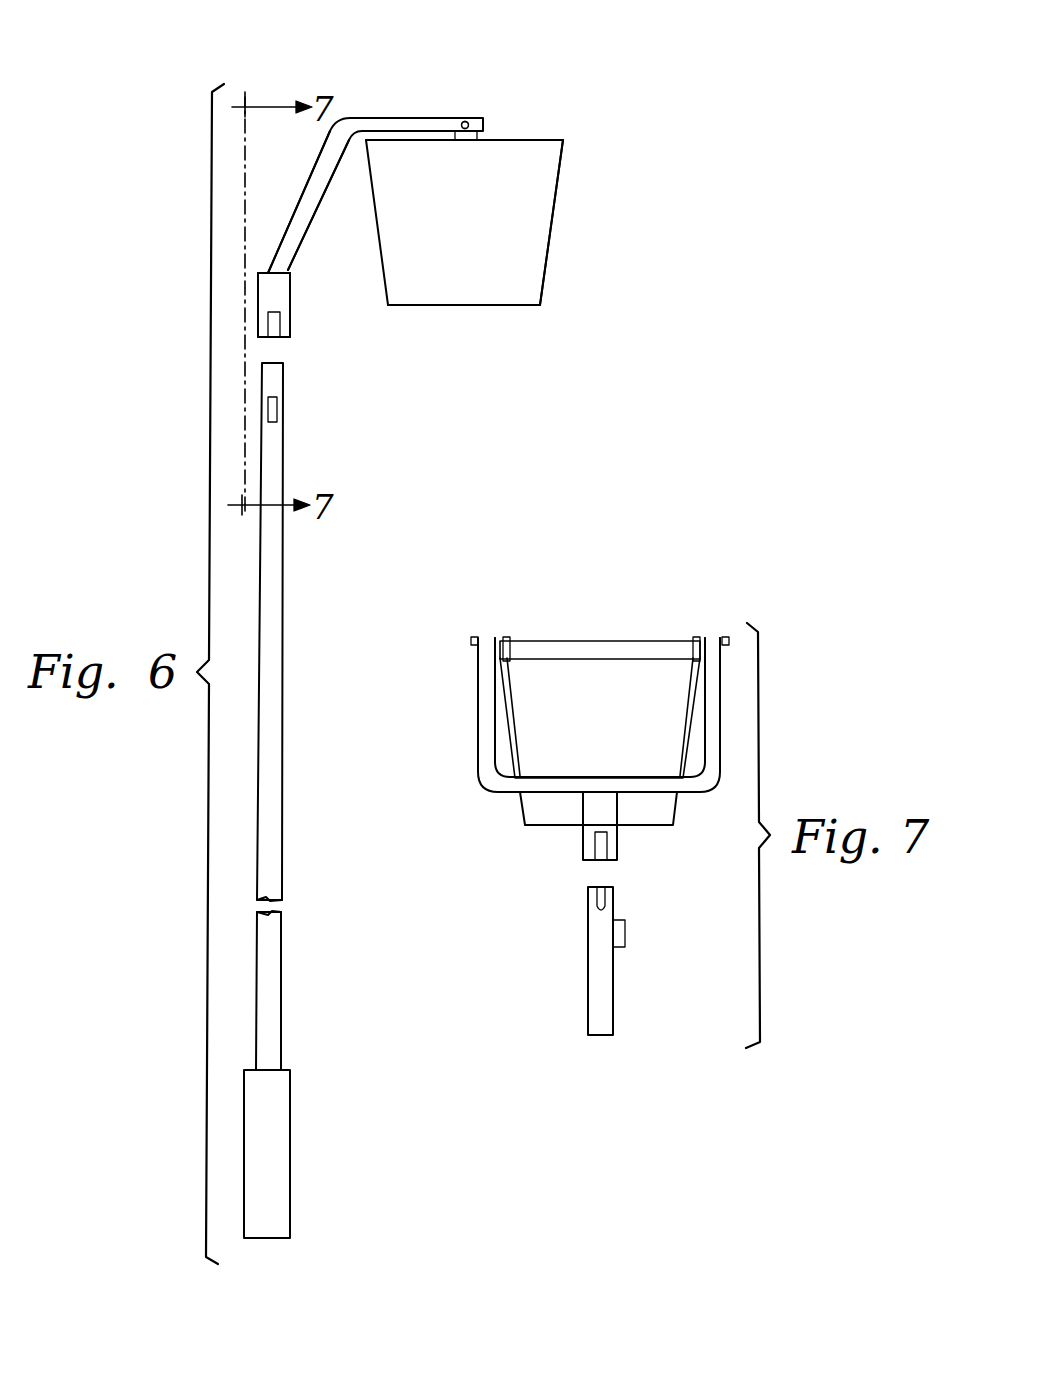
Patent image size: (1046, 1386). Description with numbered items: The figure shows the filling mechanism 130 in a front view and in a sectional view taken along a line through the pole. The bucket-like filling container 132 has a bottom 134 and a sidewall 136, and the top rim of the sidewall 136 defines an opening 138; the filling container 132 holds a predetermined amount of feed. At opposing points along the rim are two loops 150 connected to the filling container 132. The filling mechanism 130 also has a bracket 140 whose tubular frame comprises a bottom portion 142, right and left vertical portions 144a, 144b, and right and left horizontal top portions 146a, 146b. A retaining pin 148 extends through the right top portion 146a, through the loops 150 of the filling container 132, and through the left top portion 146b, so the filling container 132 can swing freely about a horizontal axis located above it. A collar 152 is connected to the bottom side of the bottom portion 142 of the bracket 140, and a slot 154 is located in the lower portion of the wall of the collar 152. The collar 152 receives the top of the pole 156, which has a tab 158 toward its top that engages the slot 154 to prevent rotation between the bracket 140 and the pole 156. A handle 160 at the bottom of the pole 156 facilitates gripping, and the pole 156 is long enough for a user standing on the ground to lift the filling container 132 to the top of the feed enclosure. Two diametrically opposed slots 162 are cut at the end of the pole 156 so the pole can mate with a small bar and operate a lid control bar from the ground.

In FIG. 6, the filling mechanism 130 is at (410, 396).
In FIG. 6, the filling container 132 is at (548, 258).
In FIG. 6, the bottom 134 is at (484, 308).
In FIG. 6, the sidewall 136 is at (553, 232).
In FIG. 6, the opening 138 is at (538, 138).
In FIG. 6, the bracket 140 is at (300, 268).
In FIG. 7, the bottom portion 142 is at (655, 796).
In FIG. 6, the right vertical portion 144a is at (300, 186).
In FIG. 7, the right vertical portion 144a is at (720, 728).
In FIG. 7, the left vertical portion 144b is at (478, 736).
In FIG. 6, the right horizontal top portion 146a is at (371, 118).
In FIG. 7, the right horizontal top portion 146a is at (712, 636).
In FIG. 7, the left horizontal top portion 146b is at (486, 636).
In FIG. 7, the retaining pin 148 is at (600, 640).
In FIG. 6, the loops 150 is at (474, 130).
In FIG. 7, the loops 150 is at (508, 637).
In FIG. 6, the collar 152 is at (292, 318).
In FIG. 7, the collar 152 is at (617, 846).
In FIG. 6, the slot 154 is at (272, 324).
In FIG. 6, the pole 156 is at (284, 566).
In FIG. 7, the pole 156 is at (613, 978).
In FIG. 6, the tab 158 is at (279, 407).
In FIG. 7, the tab 158 is at (626, 932).
In FIG. 6, the handle 160 is at (292, 1114).
In FIG. 7, the slots 162 is at (601, 888).